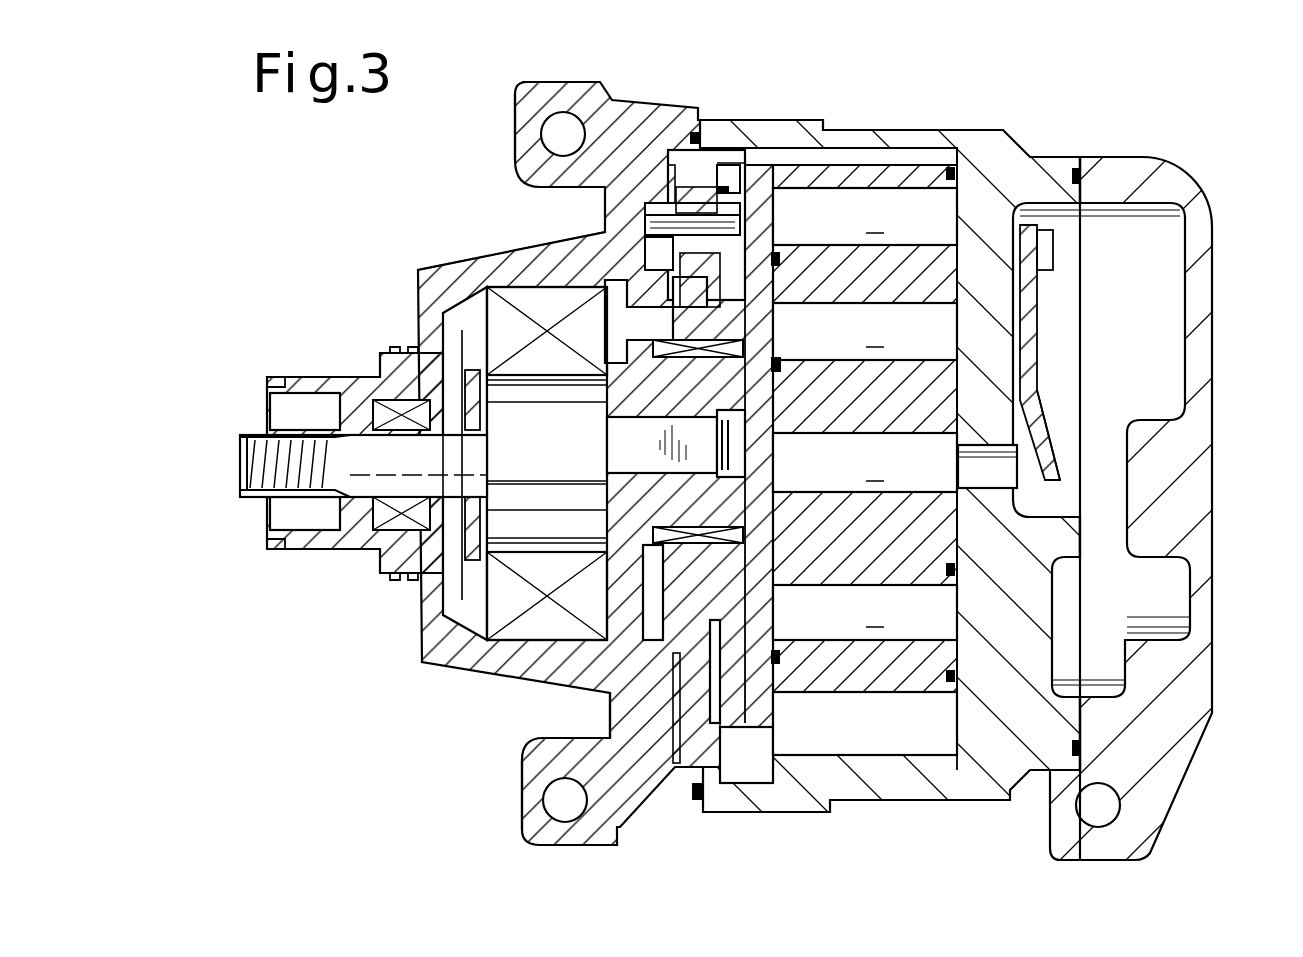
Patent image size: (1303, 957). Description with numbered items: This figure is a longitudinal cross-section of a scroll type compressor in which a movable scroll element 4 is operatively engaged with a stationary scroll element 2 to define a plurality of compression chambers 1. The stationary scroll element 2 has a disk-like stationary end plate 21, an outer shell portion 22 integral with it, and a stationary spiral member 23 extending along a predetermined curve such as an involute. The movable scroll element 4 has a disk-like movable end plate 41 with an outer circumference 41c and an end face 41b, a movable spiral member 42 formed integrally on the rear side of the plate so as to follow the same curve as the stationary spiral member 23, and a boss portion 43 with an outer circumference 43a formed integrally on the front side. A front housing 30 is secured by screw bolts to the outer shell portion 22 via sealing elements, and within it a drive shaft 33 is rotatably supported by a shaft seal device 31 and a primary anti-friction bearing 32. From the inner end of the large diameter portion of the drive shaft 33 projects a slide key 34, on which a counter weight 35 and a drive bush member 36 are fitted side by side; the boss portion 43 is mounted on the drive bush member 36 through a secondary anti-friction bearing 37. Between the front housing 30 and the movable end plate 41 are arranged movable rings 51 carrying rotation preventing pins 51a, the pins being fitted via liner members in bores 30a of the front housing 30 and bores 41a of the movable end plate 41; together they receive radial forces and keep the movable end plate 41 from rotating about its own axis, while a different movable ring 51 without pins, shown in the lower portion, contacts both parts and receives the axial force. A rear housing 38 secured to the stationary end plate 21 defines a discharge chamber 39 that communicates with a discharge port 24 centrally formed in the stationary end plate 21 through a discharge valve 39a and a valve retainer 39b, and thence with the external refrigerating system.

The compression chambers 1 is at (865, 471).
The stationary scroll element 2 is at (1020, 848).
The movable scroll element 4 is at (838, 848).
The stationary end plate 21 is at (998, 735).
The outer shell portion 22 is at (937, 773).
The stationary spiral member 23 is at (880, 650).
The discharge port 24 is at (1035, 493).
The front housing 30 is at (503, 289).
The bores 30a is at (640, 250).
The shaft seal device 31 is at (395, 397).
The primary anti-friction bearing 32 is at (508, 270).
The drive shaft 33 is at (248, 458).
The slide key 34 is at (637, 448).
The counter weight 35 is at (670, 708).
The drive bush member 36 is at (733, 543).
The secondary anti-friction bearing 37 is at (770, 268).
The rear housing 38 is at (1193, 200).
The discharge chamber 39 is at (1152, 298).
The discharge valve 39a is at (1035, 412).
The valve retainer 39b is at (1030, 357).
The movable end plate 41 is at (737, 715).
The bores 41a is at (733, 202).
The end face 41b is at (642, 827).
The outer circumference 41c is at (737, 190).
The movable spiral member 42 is at (827, 683).
The boss portion 43 is at (722, 288).
The outer circumference 43a is at (597, 312).
The movable rings 51 is at (697, 175).
The rotation preventing pins 51a is at (660, 222).